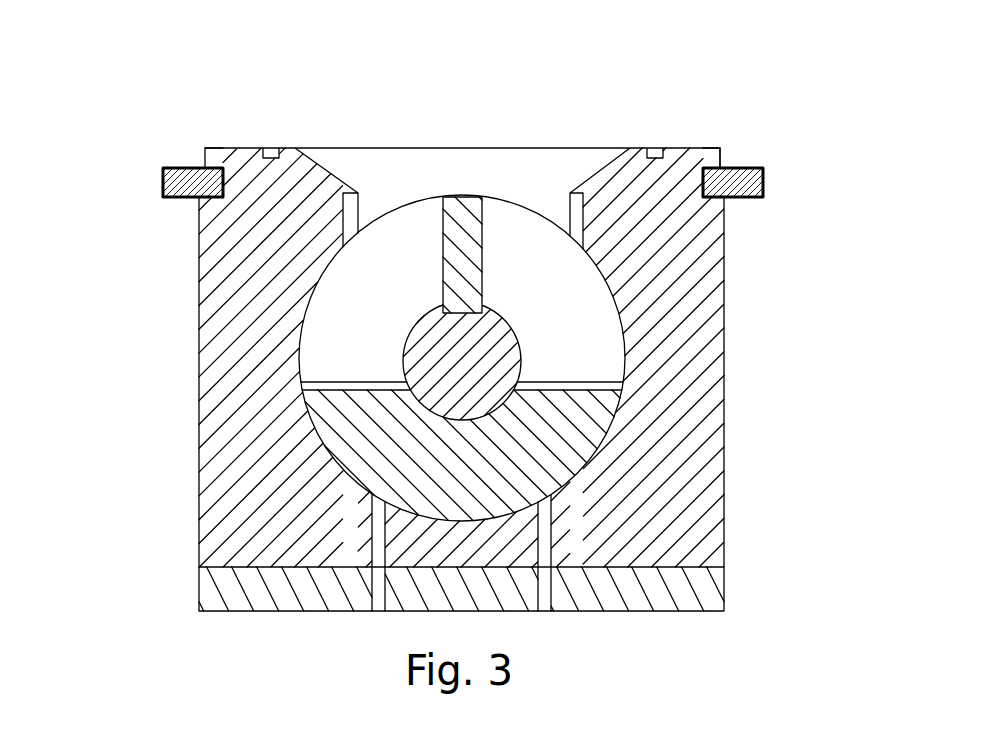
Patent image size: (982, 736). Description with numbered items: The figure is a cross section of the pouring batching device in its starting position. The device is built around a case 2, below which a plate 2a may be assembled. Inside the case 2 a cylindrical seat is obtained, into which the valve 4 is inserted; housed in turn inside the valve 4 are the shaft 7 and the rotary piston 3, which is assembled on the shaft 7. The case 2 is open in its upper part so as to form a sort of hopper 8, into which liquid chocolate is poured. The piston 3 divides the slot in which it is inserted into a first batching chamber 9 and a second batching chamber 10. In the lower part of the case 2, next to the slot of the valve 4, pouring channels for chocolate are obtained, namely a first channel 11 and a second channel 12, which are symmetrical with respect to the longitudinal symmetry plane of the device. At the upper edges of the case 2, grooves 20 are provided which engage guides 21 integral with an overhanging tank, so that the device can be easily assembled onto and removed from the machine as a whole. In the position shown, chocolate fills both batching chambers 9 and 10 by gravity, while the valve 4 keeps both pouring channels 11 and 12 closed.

The case 2 is at (660, 427).
The plate 2a is at (683, 590).
The rotary piston 3 is at (478, 230).
The valve 4 is at (557, 457).
The shaft 7 is at (513, 335).
The hopper 8 is at (420, 163).
The first batching chamber 9 is at (357, 298).
The second batching chamber 10 is at (550, 287).
The first channel 11 is at (378, 578).
The second channel 12 is at (545, 578).
The grooves 20 is at (712, 167).
The guides 21 is at (758, 167).